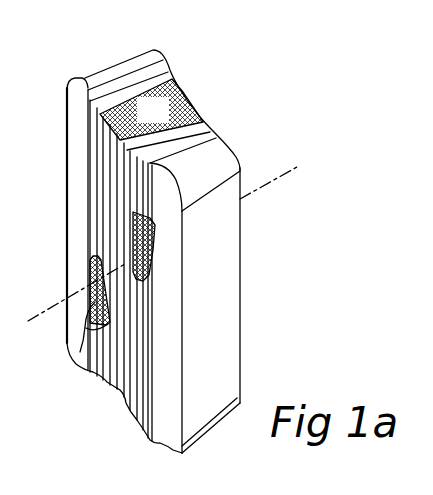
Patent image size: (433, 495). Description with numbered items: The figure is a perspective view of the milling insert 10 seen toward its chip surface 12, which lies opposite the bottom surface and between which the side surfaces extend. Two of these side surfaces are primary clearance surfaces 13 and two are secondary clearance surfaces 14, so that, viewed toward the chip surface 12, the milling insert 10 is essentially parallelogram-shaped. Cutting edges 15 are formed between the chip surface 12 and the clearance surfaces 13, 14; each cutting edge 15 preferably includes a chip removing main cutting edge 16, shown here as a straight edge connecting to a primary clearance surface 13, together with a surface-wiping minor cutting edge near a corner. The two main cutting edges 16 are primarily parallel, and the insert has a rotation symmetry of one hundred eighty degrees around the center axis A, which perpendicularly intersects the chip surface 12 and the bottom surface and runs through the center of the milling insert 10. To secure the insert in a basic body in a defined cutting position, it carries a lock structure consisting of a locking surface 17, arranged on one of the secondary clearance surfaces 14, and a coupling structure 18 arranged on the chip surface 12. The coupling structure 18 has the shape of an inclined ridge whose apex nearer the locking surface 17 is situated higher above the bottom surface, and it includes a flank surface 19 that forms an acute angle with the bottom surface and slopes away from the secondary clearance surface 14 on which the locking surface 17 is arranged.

The milling insert 10 is at (200, 68).
The chip surface 12 is at (124, 192).
The primary clearance surface 13 is at (224, 327).
The secondary clearance surface 14 is at (141, 76).
The cutting edge 15 is at (93, 79).
The main cutting edge 16 is at (66, 200).
The locking surface 17 is at (166, 121).
The coupling structure 18 is at (90, 281).
The flank surface 19 is at (80, 352).
The center axis A is at (154, 252).